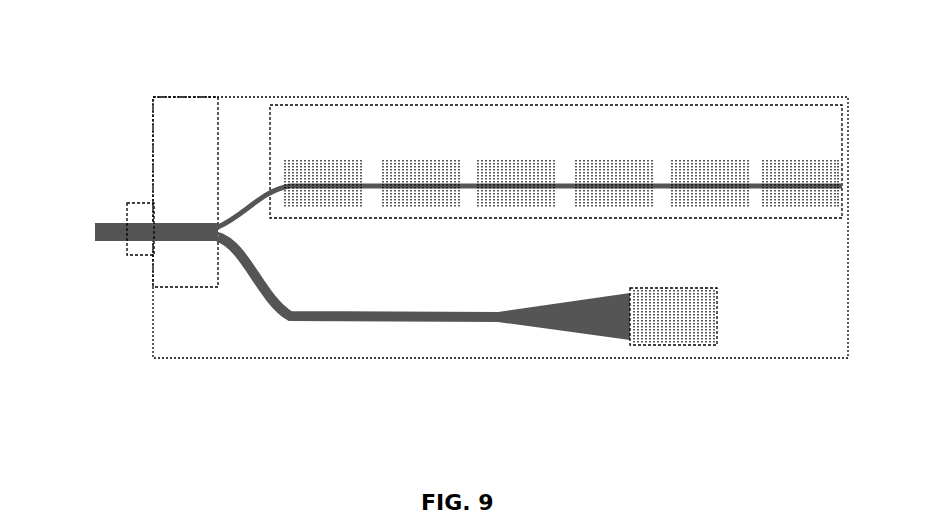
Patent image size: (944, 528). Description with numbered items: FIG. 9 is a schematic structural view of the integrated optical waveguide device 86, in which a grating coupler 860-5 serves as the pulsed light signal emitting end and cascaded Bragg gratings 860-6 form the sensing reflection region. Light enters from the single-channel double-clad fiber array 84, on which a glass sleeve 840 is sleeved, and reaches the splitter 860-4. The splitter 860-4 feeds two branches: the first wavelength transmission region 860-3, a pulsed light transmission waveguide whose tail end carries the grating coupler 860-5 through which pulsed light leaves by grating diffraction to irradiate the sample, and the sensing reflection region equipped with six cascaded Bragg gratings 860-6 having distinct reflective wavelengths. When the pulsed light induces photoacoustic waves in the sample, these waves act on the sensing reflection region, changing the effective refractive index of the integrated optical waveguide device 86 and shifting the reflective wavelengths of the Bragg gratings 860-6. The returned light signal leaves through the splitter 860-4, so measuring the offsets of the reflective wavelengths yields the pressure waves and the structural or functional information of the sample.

The single-channel double-clad fiber array 84 is at (110, 215).
The glass sleeve 840 is at (141, 261).
The splitter 860-4 is at (187, 95).
The cascaded Bragg gratings 860-6 is at (593, 97).
The first wavelength transmission region 860-3 is at (377, 324).
The grating coupler 860-5 is at (672, 347).
The integrated optical waveguide device 86 is at (510, 358).